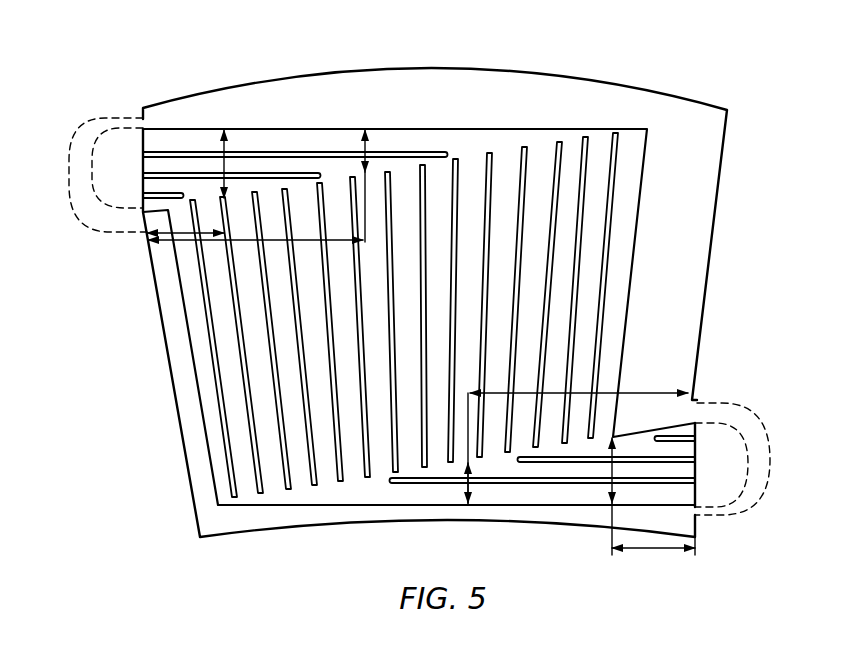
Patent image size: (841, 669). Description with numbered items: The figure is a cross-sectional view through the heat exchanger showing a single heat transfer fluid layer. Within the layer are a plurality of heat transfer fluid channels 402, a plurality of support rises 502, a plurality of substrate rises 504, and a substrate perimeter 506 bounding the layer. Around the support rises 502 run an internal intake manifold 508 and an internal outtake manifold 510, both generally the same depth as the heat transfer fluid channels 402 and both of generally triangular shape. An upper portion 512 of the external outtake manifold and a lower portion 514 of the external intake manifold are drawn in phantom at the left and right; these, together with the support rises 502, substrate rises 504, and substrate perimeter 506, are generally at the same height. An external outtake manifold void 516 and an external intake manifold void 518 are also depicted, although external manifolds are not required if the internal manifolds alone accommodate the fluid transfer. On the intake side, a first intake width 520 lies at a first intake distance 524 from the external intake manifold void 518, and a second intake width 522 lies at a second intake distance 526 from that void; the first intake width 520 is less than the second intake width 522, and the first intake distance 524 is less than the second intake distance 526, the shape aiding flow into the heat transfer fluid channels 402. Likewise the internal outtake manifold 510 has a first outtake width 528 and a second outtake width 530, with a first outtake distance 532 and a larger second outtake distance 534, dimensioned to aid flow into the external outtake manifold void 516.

The heat transfer fluid channels 402 is at (563, 260).
The support rises 502 is at (214, 152).
The substrate rises 504 is at (580, 288).
The substrate perimeter 506 is at (418, 104).
The internal intake manifold 508 is at (418, 489).
The internal outtake manifold 510 is at (323, 145).
The upper portion of external outtake manifold 512 is at (90, 164).
The lower portion of external intake manifold 514 is at (738, 488).
The external outtake manifold void 516 is at (117, 164).
The external intake manifold void 518 is at (719, 460).
The first intake width 520 is at (468, 490).
The second intake width 522 is at (612, 488).
The first intake distance 524 is at (650, 392).
The second intake distance 526 is at (653, 556).
The first outtake width 528 is at (227, 146).
The second outtake width 530 is at (368, 147).
The first outtake distance 532 is at (147, 233).
The second outtake distance 534 is at (150, 243).